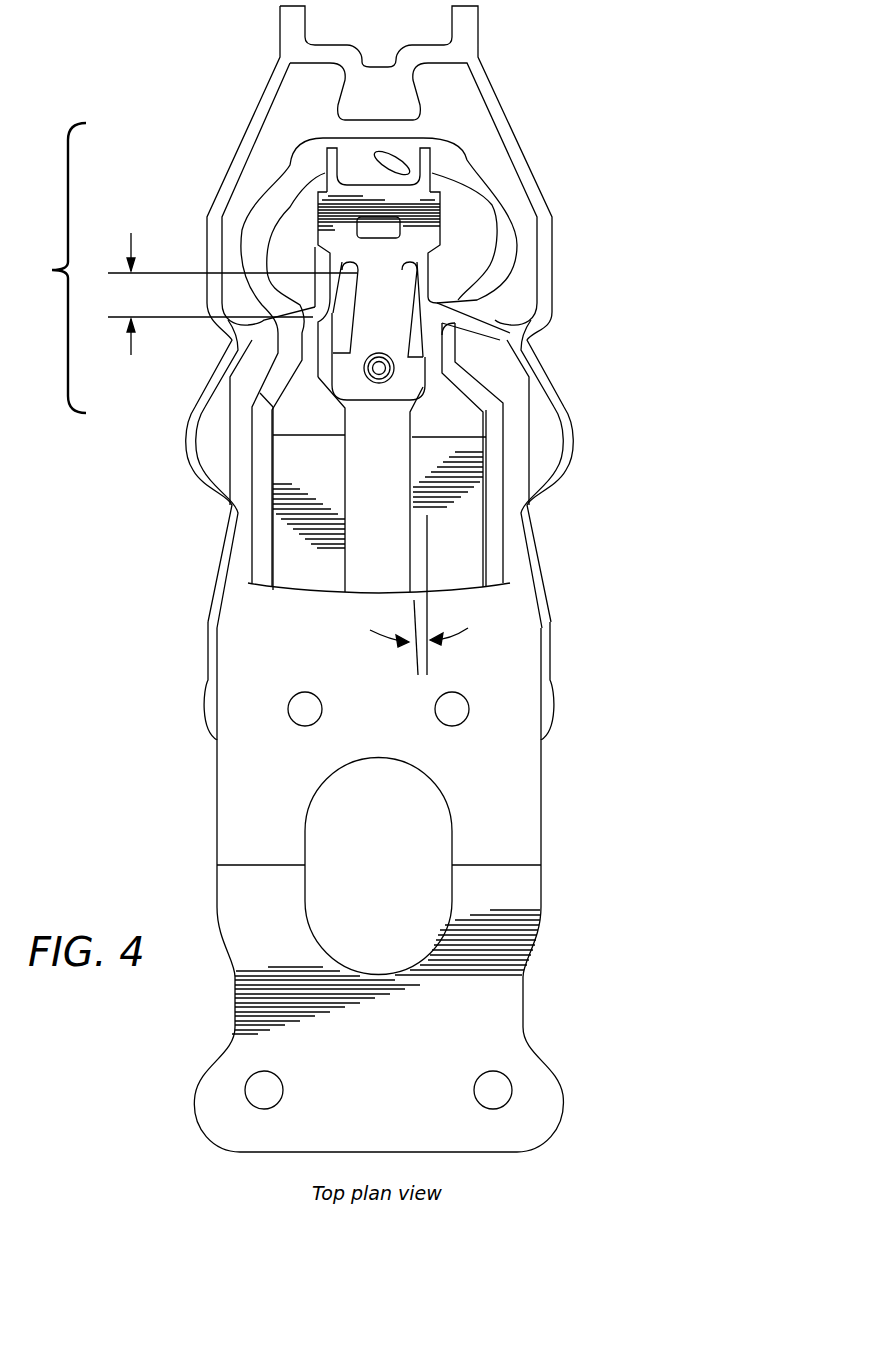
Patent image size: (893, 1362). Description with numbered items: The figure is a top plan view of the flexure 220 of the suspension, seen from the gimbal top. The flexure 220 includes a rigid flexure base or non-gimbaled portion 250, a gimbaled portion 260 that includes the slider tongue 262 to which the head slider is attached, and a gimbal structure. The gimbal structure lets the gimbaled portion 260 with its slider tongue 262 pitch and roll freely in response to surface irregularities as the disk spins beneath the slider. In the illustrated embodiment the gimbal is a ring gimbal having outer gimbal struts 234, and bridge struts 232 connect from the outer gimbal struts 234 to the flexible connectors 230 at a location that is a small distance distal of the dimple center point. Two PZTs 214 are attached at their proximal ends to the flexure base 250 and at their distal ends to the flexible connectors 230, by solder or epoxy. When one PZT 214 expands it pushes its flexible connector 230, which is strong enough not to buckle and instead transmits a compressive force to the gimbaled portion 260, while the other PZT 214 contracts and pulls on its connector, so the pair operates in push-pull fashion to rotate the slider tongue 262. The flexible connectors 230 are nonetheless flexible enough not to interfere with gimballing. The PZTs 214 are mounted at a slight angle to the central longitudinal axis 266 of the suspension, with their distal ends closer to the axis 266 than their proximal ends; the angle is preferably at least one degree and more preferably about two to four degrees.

The flexure 220 is at (192, 520).
The outer gimbal struts 234 is at (522, 173).
The bridge struts 232 is at (465, 312).
The flexible connectors 230 is at (323, 368).
The slider tongue 262 is at (330, 207).
The PZT 214 is at (475, 535).
The central longitudinal axis 266 is at (425, 660).
The gimbaled portion 260 is at (185, 268).
The flexure base 250 is at (218, 807).